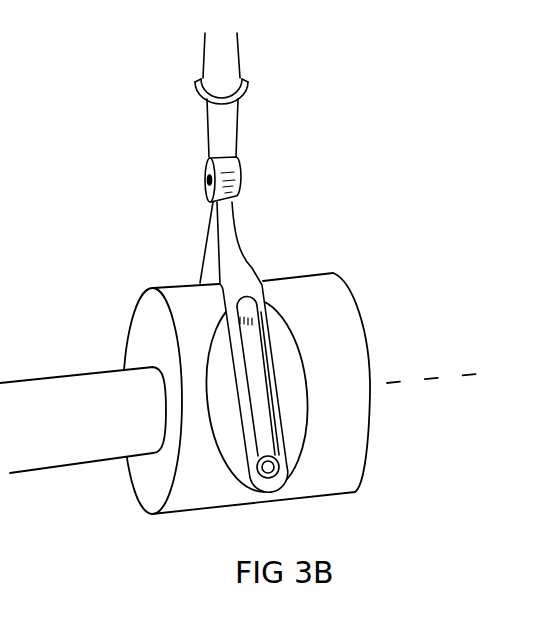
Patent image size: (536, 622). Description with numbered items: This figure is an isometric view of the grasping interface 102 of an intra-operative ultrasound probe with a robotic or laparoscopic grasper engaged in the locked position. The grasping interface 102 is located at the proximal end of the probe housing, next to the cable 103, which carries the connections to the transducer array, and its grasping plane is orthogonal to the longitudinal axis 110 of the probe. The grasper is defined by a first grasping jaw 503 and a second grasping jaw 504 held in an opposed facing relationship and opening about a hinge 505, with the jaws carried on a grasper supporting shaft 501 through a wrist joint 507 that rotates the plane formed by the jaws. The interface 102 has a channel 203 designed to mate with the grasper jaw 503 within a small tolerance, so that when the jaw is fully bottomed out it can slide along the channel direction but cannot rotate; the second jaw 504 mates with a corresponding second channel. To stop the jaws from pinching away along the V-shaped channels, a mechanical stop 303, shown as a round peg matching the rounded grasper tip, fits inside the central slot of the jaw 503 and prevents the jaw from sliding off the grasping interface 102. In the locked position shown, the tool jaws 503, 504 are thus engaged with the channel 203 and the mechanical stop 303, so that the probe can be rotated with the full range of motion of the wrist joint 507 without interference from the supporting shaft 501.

The grasping interface 102 is at (128, 492).
The cable 103 is at (30, 380).
The longitudinal axis 110 is at (445, 369).
The channel 203 is at (253, 405).
The mechanical stop 303 is at (256, 463).
The grasper supporting shaft 501 is at (238, 57).
The first grasping jaw 503 is at (261, 279).
The second grasping jaw 504 is at (202, 278).
The hinge 505 is at (242, 173).
The wrist joint 507 is at (245, 95).